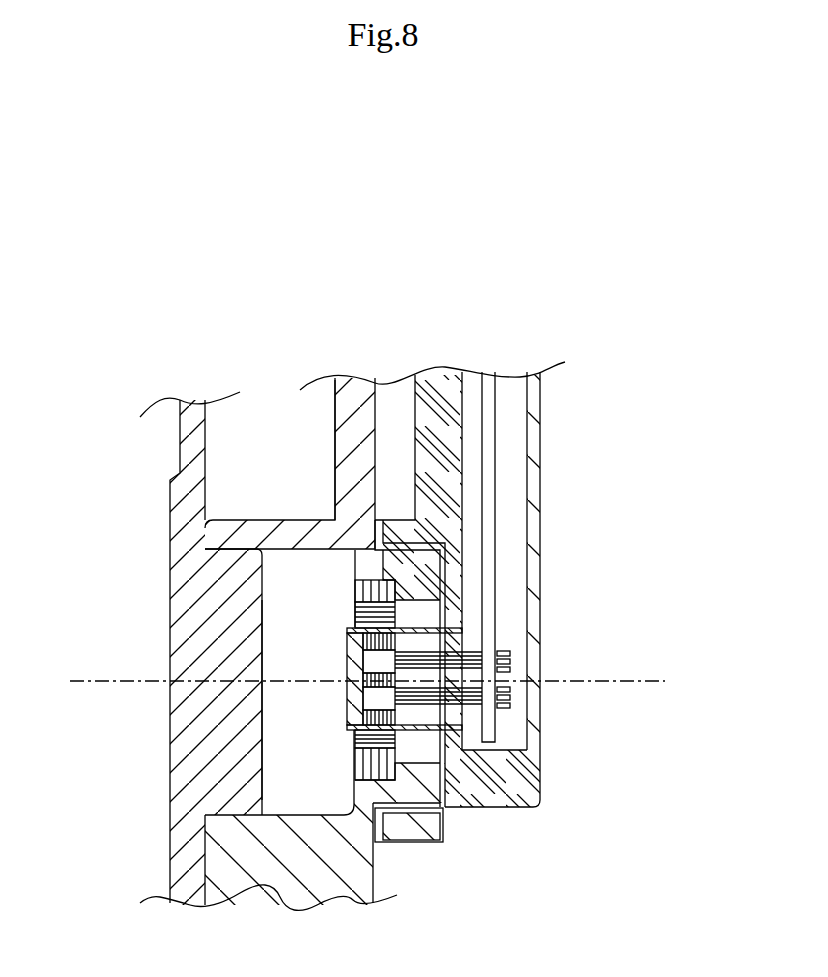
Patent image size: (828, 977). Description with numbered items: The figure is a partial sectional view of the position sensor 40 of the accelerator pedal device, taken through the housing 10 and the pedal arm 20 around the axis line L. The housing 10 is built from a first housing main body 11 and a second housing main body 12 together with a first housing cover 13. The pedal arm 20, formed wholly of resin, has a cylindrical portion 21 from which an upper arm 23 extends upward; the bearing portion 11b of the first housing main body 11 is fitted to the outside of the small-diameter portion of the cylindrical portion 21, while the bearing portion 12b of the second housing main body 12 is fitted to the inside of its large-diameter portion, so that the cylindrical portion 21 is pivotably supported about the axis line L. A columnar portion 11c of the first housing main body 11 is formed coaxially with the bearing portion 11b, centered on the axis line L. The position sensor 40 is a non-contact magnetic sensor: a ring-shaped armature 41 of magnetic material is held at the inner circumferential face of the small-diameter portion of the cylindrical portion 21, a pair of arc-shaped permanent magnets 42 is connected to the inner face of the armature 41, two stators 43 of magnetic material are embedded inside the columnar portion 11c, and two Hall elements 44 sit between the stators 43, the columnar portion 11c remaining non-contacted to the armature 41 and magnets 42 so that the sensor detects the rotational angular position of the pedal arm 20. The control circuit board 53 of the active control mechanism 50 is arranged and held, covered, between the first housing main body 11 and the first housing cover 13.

The housing 10 is at (339, 585).
The first housing main body 11 is at (440, 388).
The bearing portion 11b is at (442, 527).
The columnar portion 11c is at (347, 718).
The second housing main body 12 is at (168, 458).
The bearing portion 12b is at (196, 757).
The first housing cover 13 is at (544, 542).
The pedal arm 20 is at (370, 905).
The cylindrical portion 21 is at (273, 533).
The upper arm 23 is at (347, 388).
The position sensor 40 is at (613, 668).
The ring-shaped armature 41 is at (357, 593).
The arc-shaped permanent magnets 42 is at (356, 617).
The stators 43 is at (398, 642).
The Hall elements 44 is at (378, 660).
The active control mechanism 50 is at (585, 557).
The control circuit board 53 is at (500, 586).
The axis line L is at (105, 680).